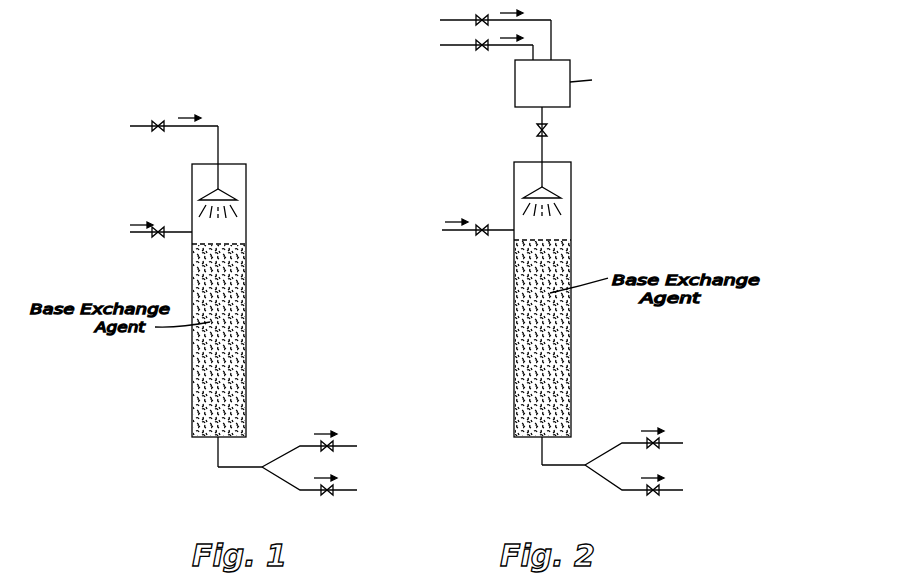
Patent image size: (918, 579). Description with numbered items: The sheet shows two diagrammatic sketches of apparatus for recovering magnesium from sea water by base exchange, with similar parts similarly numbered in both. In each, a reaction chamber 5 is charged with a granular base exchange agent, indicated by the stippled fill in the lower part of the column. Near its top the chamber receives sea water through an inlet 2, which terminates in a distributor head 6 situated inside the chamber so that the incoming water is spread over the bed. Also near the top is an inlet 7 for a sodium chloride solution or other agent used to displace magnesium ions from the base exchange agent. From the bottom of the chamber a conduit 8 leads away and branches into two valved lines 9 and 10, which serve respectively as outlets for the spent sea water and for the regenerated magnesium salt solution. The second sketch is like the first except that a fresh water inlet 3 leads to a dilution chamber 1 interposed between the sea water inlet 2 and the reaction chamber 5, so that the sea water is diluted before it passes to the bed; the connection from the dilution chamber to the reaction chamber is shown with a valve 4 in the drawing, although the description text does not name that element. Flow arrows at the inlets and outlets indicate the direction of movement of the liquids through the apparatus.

In FIG. 2, the dilution chamber 1 is at (570, 65).
In FIG. 1, the inlet for sea water 2 is at (218, 142).
In FIG. 2, the inlet for sea water 2 is at (552, 26).
In FIG. 2, the fresh water inlet 3 is at (505, 48).
In FIG. 2, the valve 4 is at (544, 118).
In FIG. 1, the reaction chamber 5 is at (246, 228).
In FIG. 2, the reaction chamber 5 is at (572, 375).
In FIG. 1, the distributor head 6 is at (224, 197).
In FIG. 2, the distributor head 6 is at (553, 193).
In FIG. 1, the inlet for sodium chloride solution 7 is at (178, 230).
In FIG. 2, the inlet for sodium chloride solution 7 is at (470, 236).
In FIG. 1, the conduit 8 is at (216, 468).
In FIG. 2, the conduit 8 is at (545, 467).
In FIG. 1, the valved line 9 is at (297, 446).
In FIG. 2, the valved line 9 is at (623, 443).
In FIG. 1, the valved line 10 is at (302, 493).
In FIG. 2, the valved line 10 is at (618, 490).